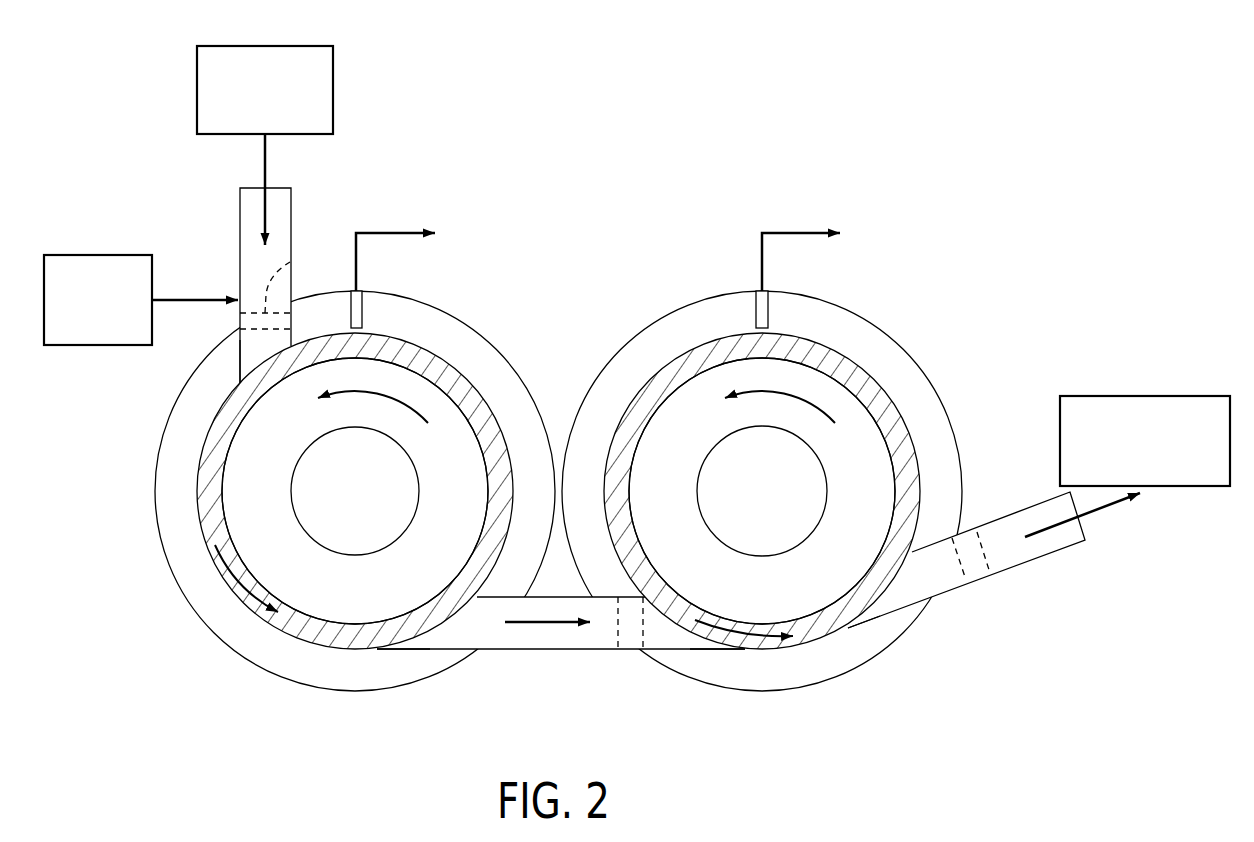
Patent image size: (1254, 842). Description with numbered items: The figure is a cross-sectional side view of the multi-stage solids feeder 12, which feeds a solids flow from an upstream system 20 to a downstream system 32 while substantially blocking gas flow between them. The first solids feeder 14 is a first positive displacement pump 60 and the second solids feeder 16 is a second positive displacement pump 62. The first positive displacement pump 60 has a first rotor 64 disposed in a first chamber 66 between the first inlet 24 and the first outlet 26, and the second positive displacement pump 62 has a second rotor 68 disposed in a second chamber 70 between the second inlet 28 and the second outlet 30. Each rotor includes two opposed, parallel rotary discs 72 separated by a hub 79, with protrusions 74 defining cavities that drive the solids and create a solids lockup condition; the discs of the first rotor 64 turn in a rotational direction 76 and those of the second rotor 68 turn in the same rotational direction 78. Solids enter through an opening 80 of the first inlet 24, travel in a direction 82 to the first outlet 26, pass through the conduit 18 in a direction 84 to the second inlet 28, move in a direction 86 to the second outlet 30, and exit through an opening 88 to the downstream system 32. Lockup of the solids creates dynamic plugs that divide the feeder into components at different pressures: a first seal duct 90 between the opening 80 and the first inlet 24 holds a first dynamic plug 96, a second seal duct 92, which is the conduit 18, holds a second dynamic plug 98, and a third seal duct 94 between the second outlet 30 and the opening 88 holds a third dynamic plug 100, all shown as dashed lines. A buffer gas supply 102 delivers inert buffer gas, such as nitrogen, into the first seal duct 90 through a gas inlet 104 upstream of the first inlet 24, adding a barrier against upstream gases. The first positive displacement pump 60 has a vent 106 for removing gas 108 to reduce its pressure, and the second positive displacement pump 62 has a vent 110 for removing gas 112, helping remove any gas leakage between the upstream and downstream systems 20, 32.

The multi-stage solids feeder 12 is at (625, 135).
The first solids feeder 14 is at (250, 668).
The second solids feeder 16 is at (820, 690).
The conduit 18 is at (500, 651).
The upstream system 20 is at (333, 93).
The first inlet 24 is at (236, 378).
The first outlet 26 is at (375, 652).
The second inlet 28 is at (742, 652).
The second outlet 30 is at (843, 636).
The downstream system 32 is at (1160, 488).
The first positive displacement pump 60 is at (322, 502).
The second positive displacement pump 62 is at (774, 512).
The first rotor 64 is at (500, 404).
The first chamber 66 is at (157, 510).
The second rotor 68 is at (640, 380).
The second chamber 70 is at (925, 368).
The rotary discs 72 is at (202, 447).
The protrusions 74 is at (318, 640).
The rotational direction 76 is at (427, 426).
The rotational direction 78 is at (833, 427).
The hub 79 is at (372, 498).
The opening 80 is at (286, 188).
The direction 82 is at (228, 585).
The direction 84 is at (548, 650).
The direction 86 is at (750, 640).
The opening 88 is at (1085, 527).
The first seal duct 90 is at (312, 225).
The second seal duct 92 is at (588, 656).
The third seal duct 94 is at (1030, 570).
The first dynamic plug 96 is at (296, 262).
The second dynamic plug 98 is at (618, 627).
The third dynamic plug 100 is at (990, 573).
The buffer gas supply 102 is at (98, 255).
The gas inlet 104 is at (238, 296).
The vent 106 is at (365, 308).
The gas 108 is at (390, 233).
The vent 110 is at (770, 310).
The gas 112 is at (795, 233).